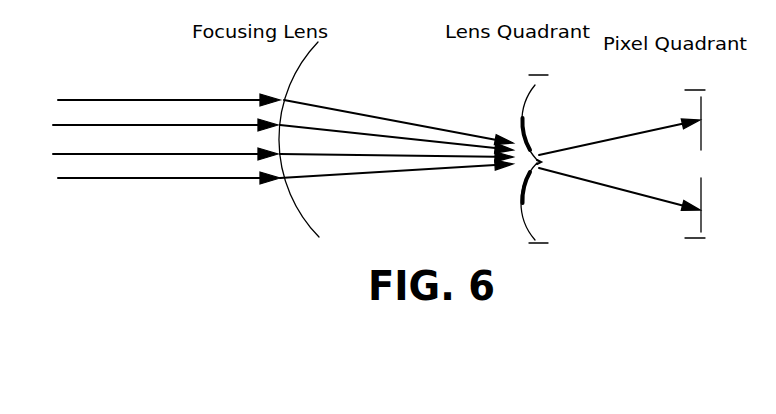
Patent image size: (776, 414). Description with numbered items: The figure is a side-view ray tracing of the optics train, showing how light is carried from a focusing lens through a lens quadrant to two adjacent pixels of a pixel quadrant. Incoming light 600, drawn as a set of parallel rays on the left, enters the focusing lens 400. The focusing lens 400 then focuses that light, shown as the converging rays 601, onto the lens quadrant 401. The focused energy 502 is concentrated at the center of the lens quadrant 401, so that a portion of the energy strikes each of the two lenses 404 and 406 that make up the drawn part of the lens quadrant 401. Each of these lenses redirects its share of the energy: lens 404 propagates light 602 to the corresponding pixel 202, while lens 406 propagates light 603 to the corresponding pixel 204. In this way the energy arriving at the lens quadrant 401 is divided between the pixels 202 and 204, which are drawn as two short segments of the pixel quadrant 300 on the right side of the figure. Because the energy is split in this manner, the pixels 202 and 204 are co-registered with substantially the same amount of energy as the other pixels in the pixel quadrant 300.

The light 600 is at (171, 98).
The focusing lens 400 is at (296, 72).
The focused light 601 is at (434, 124).
The lens quadrant 401 is at (513, 146).
The lens 404 is at (532, 91).
The energy 502 is at (524, 192).
The lens 406 is at (530, 232).
The pixel quadrant 300 is at (702, 150).
The propagated light 602 is at (634, 126).
The propagated light 603 is at (634, 195).
The pixel 202 is at (712, 118).
The pixel 204 is at (712, 198).